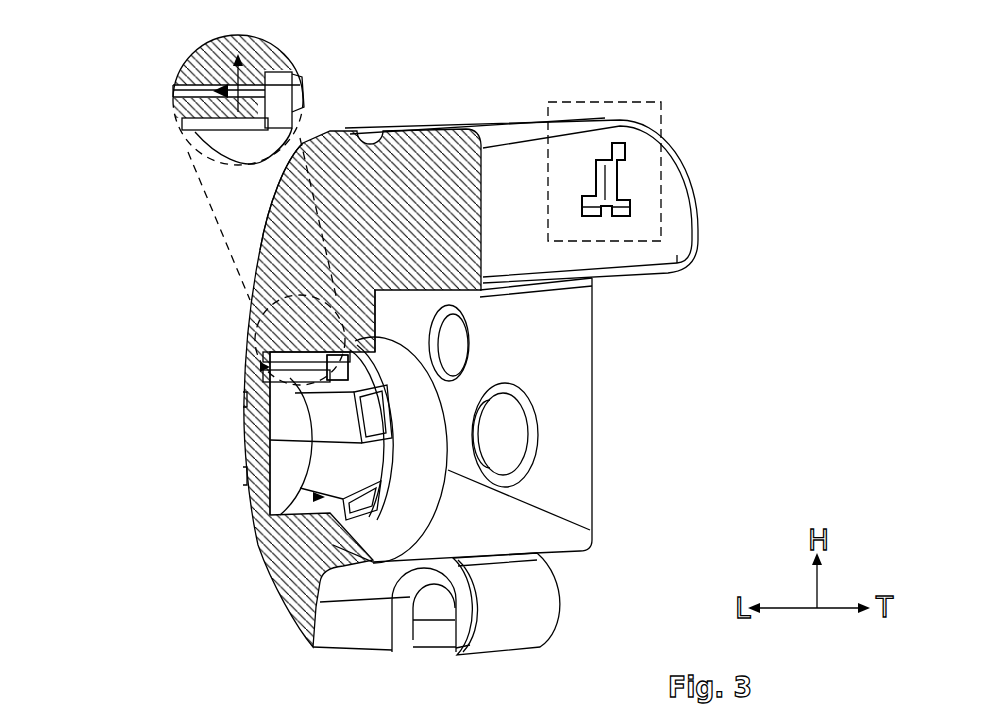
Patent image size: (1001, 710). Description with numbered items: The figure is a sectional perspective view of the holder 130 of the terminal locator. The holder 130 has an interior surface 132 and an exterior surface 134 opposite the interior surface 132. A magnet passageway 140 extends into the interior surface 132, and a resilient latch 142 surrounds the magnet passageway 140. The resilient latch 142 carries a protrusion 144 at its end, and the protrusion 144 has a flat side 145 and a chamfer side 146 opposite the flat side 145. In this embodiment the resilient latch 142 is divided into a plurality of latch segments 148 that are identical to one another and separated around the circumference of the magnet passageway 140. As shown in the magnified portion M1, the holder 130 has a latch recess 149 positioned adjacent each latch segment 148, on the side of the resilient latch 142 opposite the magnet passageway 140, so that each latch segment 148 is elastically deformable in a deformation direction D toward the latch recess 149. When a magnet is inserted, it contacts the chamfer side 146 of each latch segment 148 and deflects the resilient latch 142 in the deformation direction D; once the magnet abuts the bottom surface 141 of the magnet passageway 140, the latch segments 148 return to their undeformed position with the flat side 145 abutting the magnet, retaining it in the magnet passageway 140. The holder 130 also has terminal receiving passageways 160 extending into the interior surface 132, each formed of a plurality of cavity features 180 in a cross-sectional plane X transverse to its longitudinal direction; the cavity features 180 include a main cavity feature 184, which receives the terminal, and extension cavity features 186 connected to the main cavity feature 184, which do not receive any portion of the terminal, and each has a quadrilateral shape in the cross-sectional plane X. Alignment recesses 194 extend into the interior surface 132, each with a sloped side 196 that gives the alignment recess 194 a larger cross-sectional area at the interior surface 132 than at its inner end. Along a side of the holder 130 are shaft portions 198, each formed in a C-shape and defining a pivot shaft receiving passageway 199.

The holder 130 is at (122, 24).
The interior surface 132 is at (463, 366).
The exterior surface 134 is at (258, 258).
The magnet passageway 140 is at (385, 464).
The bottom surface 141 is at (328, 418).
The resilient latch 142 is at (247, 477).
The protrusion 144 is at (305, 405).
The flat side 145 is at (338, 374).
The chamfer side 146 is at (343, 358).
The latch segments 148 is at (262, 364).
The latch recess 149 is at (210, 97).
The terminal receiving passageways 160 is at (596, 140).
The cavity features 180 is at (613, 125).
The main cavity feature 184 is at (606, 181).
The extension cavity features 186 is at (583, 213).
The alignment recesses 194 is at (568, 429).
The sloped side 196 is at (510, 418).
The shaft portions 198 is at (548, 603).
The pivot shaft receiving passageway 199 is at (436, 630).
The deformation direction D is at (232, 78).
The magnified portion M1 is at (270, 48).
The cross-sectional plane X is at (661, 103).